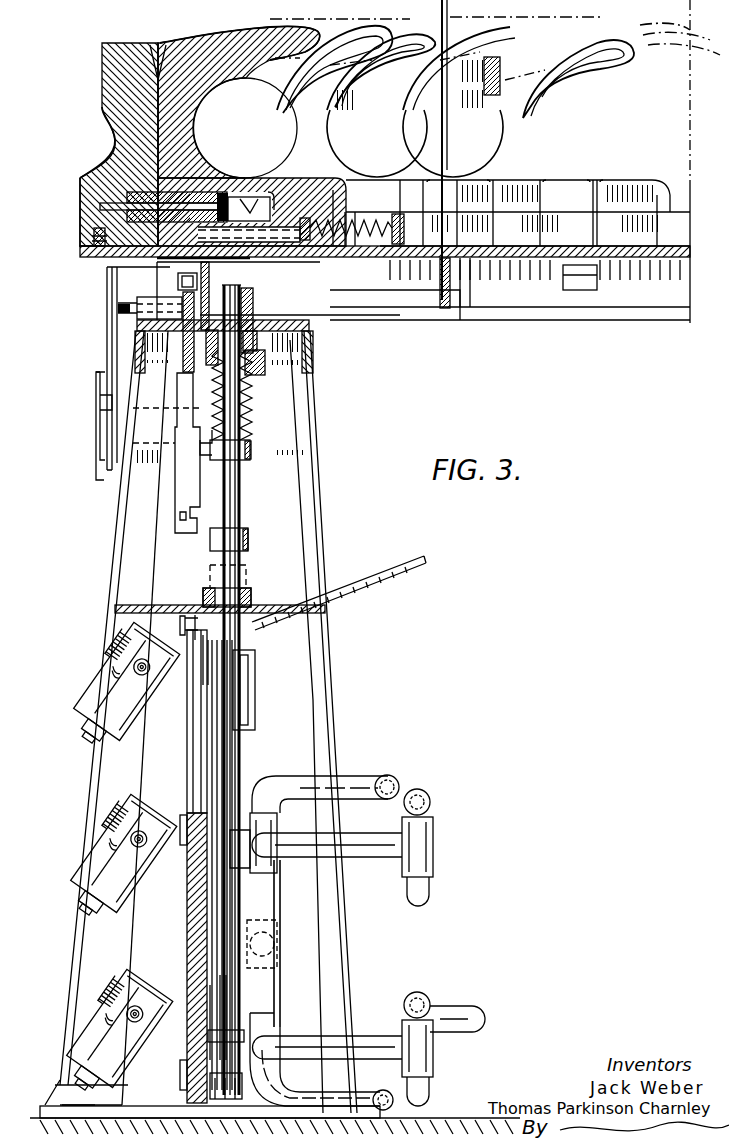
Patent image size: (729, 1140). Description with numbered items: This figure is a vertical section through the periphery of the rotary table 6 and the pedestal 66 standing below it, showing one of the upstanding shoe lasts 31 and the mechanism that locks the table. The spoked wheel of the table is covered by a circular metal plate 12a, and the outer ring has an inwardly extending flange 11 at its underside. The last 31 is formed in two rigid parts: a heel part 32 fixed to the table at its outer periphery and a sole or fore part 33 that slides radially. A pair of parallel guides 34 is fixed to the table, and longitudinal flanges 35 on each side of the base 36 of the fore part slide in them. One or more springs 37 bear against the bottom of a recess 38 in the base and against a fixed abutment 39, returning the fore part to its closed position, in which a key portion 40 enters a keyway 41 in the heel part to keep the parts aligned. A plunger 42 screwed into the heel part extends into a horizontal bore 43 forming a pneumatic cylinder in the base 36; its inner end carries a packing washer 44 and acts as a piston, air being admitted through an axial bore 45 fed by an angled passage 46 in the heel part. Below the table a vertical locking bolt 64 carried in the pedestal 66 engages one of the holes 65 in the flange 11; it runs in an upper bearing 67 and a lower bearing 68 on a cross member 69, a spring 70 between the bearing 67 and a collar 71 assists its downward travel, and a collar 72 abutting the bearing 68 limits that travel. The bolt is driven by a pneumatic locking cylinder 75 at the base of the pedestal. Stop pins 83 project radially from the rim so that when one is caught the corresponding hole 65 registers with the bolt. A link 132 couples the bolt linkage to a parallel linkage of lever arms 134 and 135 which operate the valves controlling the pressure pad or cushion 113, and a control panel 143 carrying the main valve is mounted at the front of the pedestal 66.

The shoe last 31 is at (95, 97).
The heel part 32 is at (94, 142).
The angled passage 46 is at (93, 200).
The sole or fore part 33 is at (172, 131).
The key portion 40 is at (150, 55).
The keyway 41 is at (162, 85).
The packing washer 44 is at (218, 200).
The base of fore part 36 is at (245, 203).
The horizontal bore (pneumatic cylinder) 43 is at (241, 262).
The longitudinal flange 35 is at (352, 215).
The circular metal plate 12a is at (683, 262).
The rotary table 6 is at (82, 250).
The plunger 42 is at (142, 220).
The axial bore 45 is at (153, 203).
The stop pin 83 is at (178, 283).
The hole 65 is at (245, 305).
The flange of outer ring (rim) 11 is at (250, 310).
The recess 38 is at (333, 260).
The guide 34 is at (352, 262).
The spring 37 is at (390, 262).
The fixed abutment 39 is at (425, 262).
The bearing 67 is at (272, 352).
The locking bolt 64 is at (226, 387).
The spring 70 is at (248, 433).
The collar 71 is at (250, 450).
The control panel or plate 143 is at (104, 382).
The collar 72 is at (250, 540).
The pedestal 66 is at (302, 560).
The bearing 68 is at (256, 595).
The cross member 69 is at (292, 615).
The link 132 is at (226, 680).
The lever arm 134 is at (232, 795).
The pressure pad or cushion 113 is at (220, 907).
The lever arm 135 is at (223, 983).
The pneumatic locking cylinder 75 is at (220, 986).